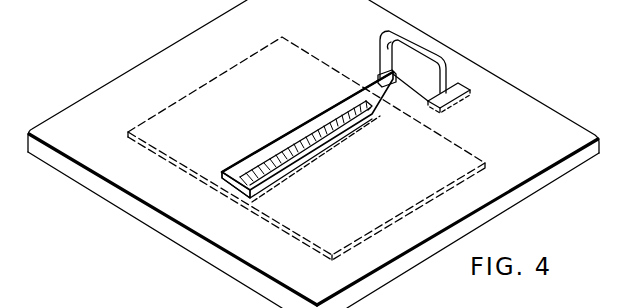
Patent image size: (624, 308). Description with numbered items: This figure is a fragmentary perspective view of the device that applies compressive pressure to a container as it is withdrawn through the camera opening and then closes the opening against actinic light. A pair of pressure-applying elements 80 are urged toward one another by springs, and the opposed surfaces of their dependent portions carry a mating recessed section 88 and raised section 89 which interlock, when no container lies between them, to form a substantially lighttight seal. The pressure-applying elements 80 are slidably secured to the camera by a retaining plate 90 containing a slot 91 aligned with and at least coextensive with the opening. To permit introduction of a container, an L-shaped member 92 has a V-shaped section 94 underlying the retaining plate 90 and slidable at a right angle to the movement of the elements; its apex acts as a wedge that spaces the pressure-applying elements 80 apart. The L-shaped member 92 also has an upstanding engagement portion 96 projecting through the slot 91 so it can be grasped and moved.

The pressure-applying elements 80 is at (167, 109).
The recessed section 88 is at (313, 138).
The raised section 89 is at (325, 140).
The retaining plate 90 is at (350, 275).
The slot 91 is at (252, 156).
The L-shaped member 92 is at (451, 72).
The V-shaped section 94 is at (380, 79).
The engagement portion 96 is at (391, 46).